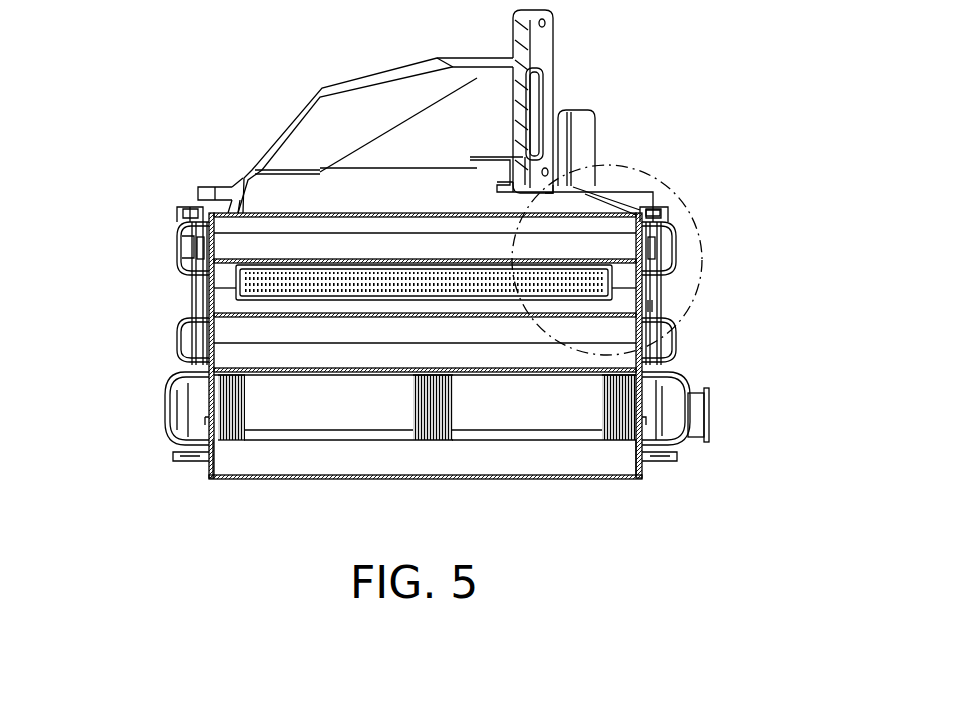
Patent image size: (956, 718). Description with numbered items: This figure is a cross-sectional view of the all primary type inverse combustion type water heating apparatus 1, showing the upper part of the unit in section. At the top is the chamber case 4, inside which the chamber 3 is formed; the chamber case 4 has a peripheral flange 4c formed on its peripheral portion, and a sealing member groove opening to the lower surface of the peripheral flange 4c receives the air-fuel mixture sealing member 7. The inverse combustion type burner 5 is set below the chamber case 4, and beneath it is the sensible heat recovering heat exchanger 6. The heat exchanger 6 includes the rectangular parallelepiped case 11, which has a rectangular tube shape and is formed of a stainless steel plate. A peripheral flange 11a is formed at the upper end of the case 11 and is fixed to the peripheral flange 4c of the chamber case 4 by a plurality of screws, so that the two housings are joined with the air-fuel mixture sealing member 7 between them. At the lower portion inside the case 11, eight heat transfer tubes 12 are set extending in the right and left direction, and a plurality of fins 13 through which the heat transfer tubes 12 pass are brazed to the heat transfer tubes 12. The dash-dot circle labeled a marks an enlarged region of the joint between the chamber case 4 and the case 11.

The water heating apparatus 1 is at (680, 62).
The chamber 3 is at (453, 152).
The chamber case 4 is at (353, 98).
The peripheral flange 4c is at (186, 205).
The inverse combustion type burner 5 is at (344, 302).
The sensible heat recovering heat exchanger 6 is at (686, 276).
The air-fuel mixture sealing member 7 is at (658, 211).
The case 11 is at (203, 297).
The peripheral flange 11a is at (188, 240).
The heat transfer tubes 12 is at (542, 412).
The fins 13 is at (432, 443).
The enlarged region a is at (616, 164).